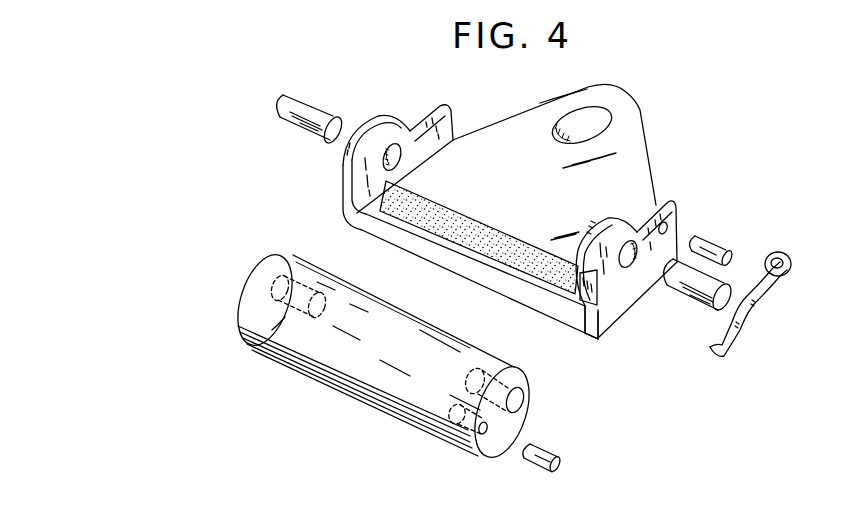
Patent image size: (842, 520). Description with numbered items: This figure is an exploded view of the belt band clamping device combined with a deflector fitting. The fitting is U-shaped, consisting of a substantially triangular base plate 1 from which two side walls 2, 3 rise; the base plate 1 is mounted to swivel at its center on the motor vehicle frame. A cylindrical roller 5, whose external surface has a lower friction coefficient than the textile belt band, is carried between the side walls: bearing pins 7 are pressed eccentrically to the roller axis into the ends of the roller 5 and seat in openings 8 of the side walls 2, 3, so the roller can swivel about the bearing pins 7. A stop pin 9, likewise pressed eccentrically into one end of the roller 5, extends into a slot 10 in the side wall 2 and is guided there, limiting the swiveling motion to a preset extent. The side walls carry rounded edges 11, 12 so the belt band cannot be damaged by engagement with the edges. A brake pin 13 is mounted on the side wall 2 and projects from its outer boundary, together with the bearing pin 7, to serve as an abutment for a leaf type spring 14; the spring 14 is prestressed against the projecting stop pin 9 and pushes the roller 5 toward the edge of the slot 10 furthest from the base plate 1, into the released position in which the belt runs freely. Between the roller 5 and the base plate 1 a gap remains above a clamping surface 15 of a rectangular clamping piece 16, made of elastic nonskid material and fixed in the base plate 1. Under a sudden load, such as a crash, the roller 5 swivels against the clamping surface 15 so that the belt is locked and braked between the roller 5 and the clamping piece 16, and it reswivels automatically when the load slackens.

The base plate 1 is at (637, 146).
The side wall 2 is at (610, 238).
The side wall 3 is at (390, 130).
The cylindrical roller 5 is at (377, 383).
The bearing pin 7 is at (293, 113).
The opening 8 is at (630, 270).
The stop pin 9 is at (530, 460).
The slot 10 is at (574, 306).
The rounded edge 11 is at (436, 108).
The rounded edge 12 is at (597, 315).
The brake pin 13 is at (722, 246).
The leaf type spring 14 is at (764, 296).
The clamping surface 15 is at (461, 222).
The clamping piece 16 is at (507, 232).